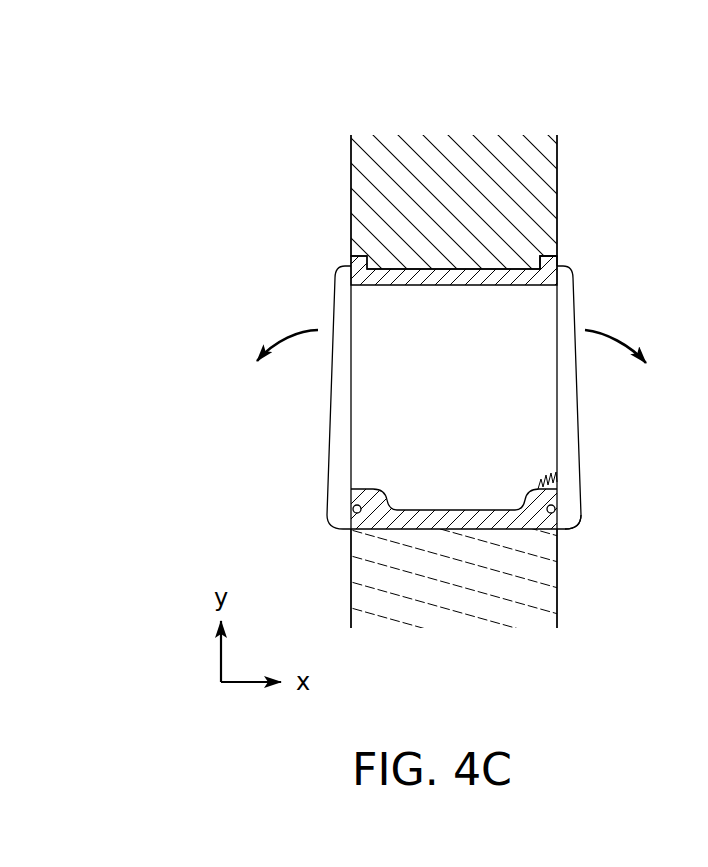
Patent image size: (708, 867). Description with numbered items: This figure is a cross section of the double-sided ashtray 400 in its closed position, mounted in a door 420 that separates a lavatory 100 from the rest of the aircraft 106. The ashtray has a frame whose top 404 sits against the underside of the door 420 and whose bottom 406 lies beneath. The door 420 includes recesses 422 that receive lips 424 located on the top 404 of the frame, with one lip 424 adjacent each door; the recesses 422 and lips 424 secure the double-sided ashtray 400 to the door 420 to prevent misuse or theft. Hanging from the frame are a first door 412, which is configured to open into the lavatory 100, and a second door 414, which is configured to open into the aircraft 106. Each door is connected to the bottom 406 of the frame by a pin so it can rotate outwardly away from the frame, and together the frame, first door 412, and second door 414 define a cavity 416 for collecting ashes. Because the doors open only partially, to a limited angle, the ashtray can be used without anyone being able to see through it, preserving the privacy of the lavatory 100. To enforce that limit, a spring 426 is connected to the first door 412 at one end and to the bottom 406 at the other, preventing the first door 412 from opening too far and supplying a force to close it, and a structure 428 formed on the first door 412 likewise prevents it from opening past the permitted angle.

The lavatory 100 is at (644, 175).
The aircraft 106 is at (190, 215).
The double-sided ashtray 400 is at (271, 124).
The top 404 is at (408, 273).
The bottom 406 is at (458, 510).
The first door 412 is at (583, 446).
The second door 414 is at (330, 417).
The cavity 416 is at (432, 480).
The door 420 is at (495, 135).
The recesses 422 is at (555, 243).
The lips 424 is at (558, 263).
The spring 426 is at (536, 471).
The structure 428 is at (570, 529).